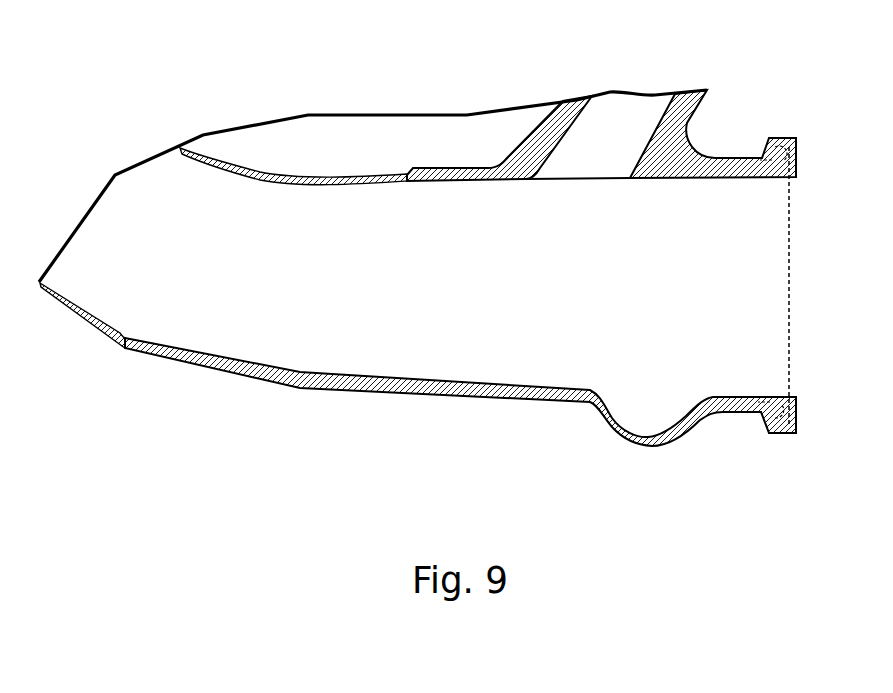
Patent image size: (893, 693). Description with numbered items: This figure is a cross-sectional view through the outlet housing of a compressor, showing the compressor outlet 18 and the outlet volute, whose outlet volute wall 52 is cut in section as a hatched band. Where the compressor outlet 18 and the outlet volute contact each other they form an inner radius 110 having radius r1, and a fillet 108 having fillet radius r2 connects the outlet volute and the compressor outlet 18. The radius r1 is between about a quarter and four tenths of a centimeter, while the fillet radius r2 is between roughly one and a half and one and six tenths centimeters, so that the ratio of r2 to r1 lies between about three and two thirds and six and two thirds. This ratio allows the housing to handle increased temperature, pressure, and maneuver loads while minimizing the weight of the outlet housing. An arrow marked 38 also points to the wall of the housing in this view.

The compressor outlet 18 is at (634, 267).
The wall 38 is at (217, 398).
The outlet volute wall 52 is at (407, 373).
The fillet 108 is at (688, 137).
The inner radius 110 is at (620, 168).
The radius of inner radius r1 is at (630, 177).
The fillet radius r2 is at (692, 147).